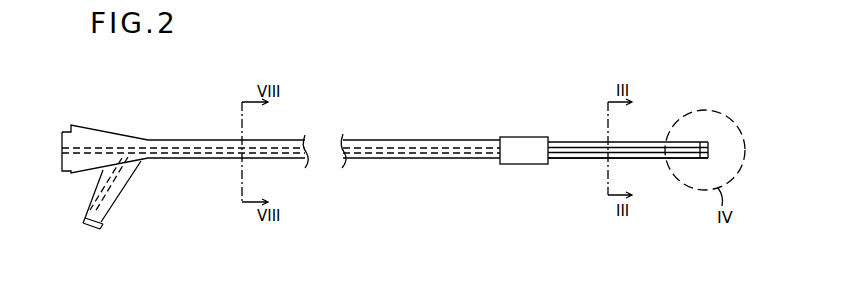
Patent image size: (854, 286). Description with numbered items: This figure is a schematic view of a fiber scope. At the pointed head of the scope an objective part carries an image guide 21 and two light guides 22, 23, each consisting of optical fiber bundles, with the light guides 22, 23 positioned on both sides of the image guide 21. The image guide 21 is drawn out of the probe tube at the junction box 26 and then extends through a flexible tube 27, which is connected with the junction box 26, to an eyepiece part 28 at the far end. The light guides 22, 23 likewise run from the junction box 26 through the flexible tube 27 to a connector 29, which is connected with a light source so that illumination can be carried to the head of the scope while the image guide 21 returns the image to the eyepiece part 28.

The image guide 21 is at (592, 150).
The light guide 22 is at (565, 141).
The light guide 23 is at (572, 160).
The junction box 26 is at (512, 134).
The flexible tube 27 is at (406, 133).
The eyepiece part 28 is at (117, 130).
The connector 29 is at (94, 226).